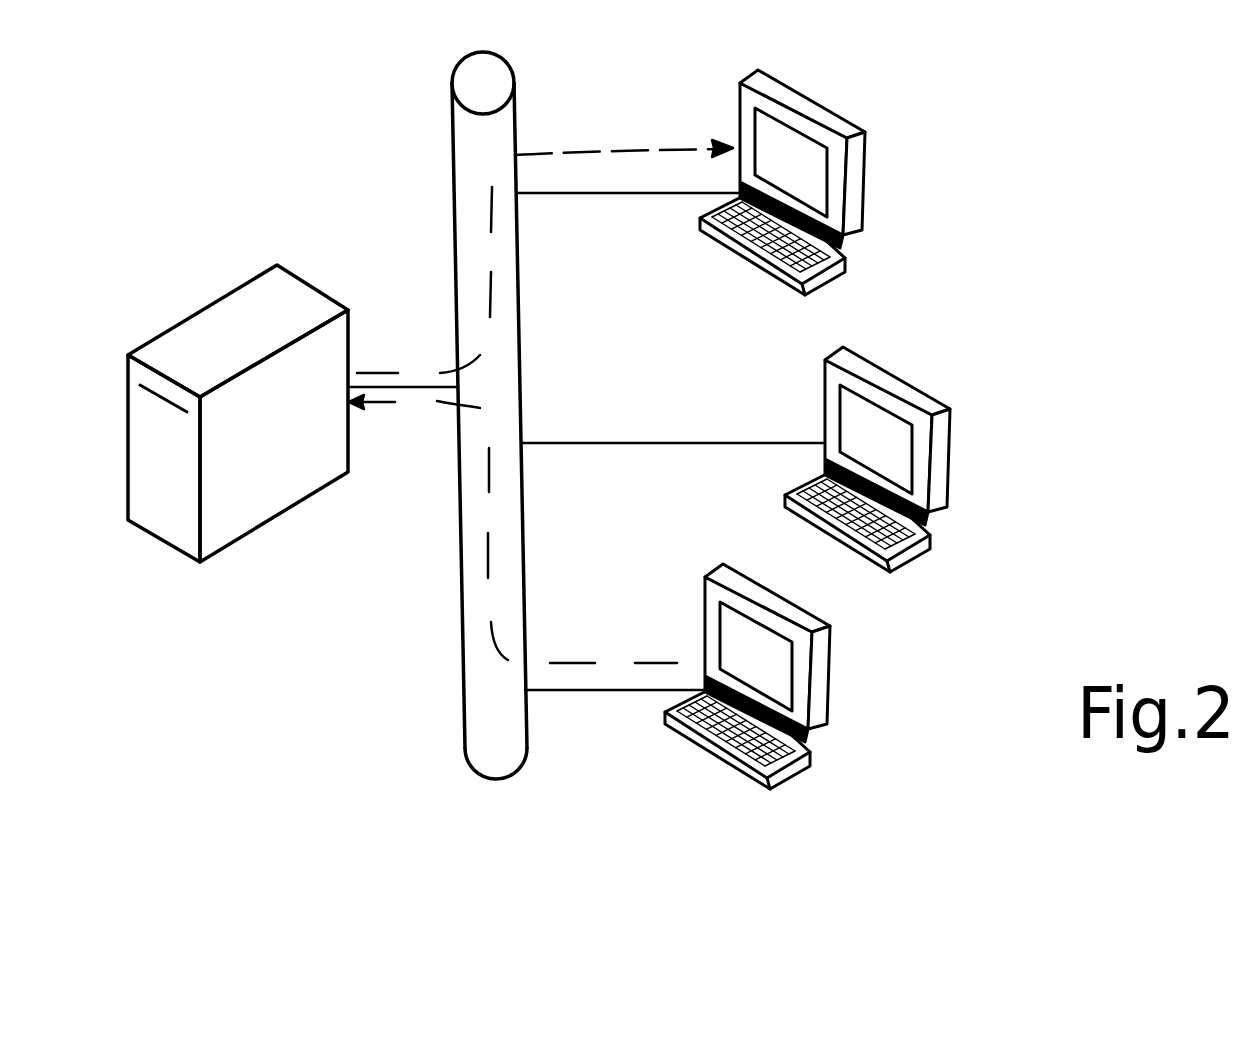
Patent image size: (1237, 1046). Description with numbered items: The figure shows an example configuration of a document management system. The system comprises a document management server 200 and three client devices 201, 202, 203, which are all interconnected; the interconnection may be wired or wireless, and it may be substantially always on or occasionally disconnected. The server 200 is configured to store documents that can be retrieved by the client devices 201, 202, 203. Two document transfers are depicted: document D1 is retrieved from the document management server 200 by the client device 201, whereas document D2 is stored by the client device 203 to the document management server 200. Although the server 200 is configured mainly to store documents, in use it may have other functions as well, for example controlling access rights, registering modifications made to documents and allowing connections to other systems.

The document management server 200 is at (238, 413).
The client device 201 is at (833, 112).
The client device 202 is at (870, 360).
The client device 203 is at (825, 695).
The document D1 is at (414, 375).
The document D2 is at (622, 650).